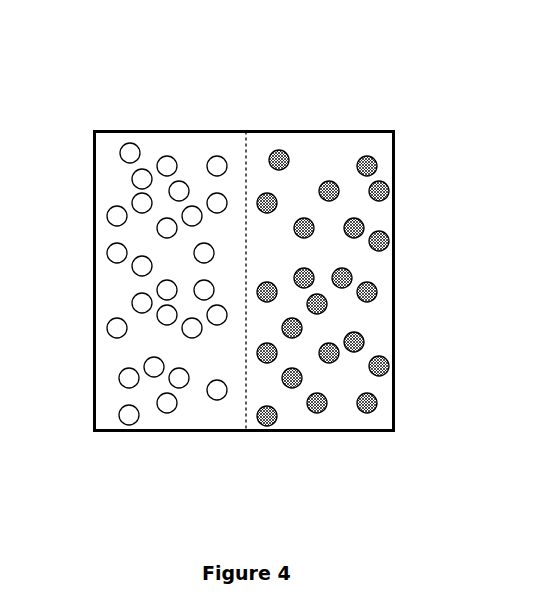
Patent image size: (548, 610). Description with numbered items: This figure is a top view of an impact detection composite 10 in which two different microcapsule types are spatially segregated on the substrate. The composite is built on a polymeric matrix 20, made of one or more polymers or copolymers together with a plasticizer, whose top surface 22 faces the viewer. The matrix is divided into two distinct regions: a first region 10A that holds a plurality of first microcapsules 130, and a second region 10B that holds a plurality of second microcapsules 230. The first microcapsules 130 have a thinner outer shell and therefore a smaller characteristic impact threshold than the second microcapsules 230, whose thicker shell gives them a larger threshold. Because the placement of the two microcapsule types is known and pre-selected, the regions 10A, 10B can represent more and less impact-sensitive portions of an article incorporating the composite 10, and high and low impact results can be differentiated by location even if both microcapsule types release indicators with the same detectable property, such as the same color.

The impact detection composite 10 is at (153, 85).
The first region 10A is at (107, 282).
The second region 10B is at (473, 144).
The polymeric matrix 20 is at (182, 432).
The top surface 22 is at (345, 407).
The first microcapsule 130 is at (167, 156).
The second microcapsule 230 is at (281, 151).